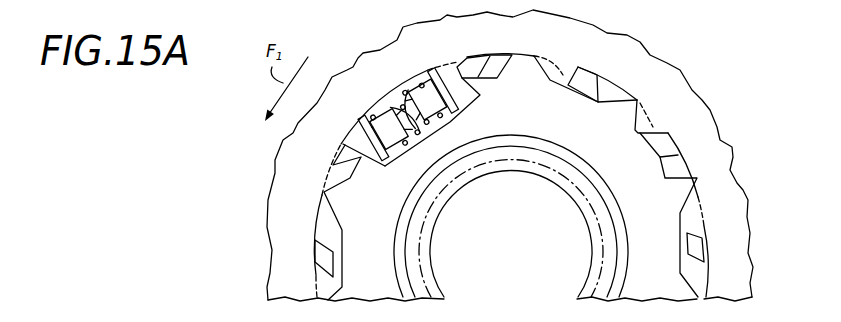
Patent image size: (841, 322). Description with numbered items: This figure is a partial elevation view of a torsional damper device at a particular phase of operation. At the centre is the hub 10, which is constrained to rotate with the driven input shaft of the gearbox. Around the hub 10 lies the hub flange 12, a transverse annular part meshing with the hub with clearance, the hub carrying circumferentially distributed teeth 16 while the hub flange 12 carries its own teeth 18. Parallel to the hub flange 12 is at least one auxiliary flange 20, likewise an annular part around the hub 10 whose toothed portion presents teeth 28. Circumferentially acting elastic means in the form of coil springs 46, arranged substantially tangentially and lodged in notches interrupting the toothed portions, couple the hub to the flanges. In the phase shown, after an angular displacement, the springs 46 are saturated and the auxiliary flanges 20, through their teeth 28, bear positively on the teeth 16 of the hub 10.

The hub 10 is at (612, 151).
The hub flange 12 is at (670, 170).
The teeth 16 is at (527, 60).
The teeth 18 is at (568, 86).
The auxiliary flange 20 is at (720, 160).
The teeth 28 is at (549, 81).
The coil spring 46 is at (390, 160).